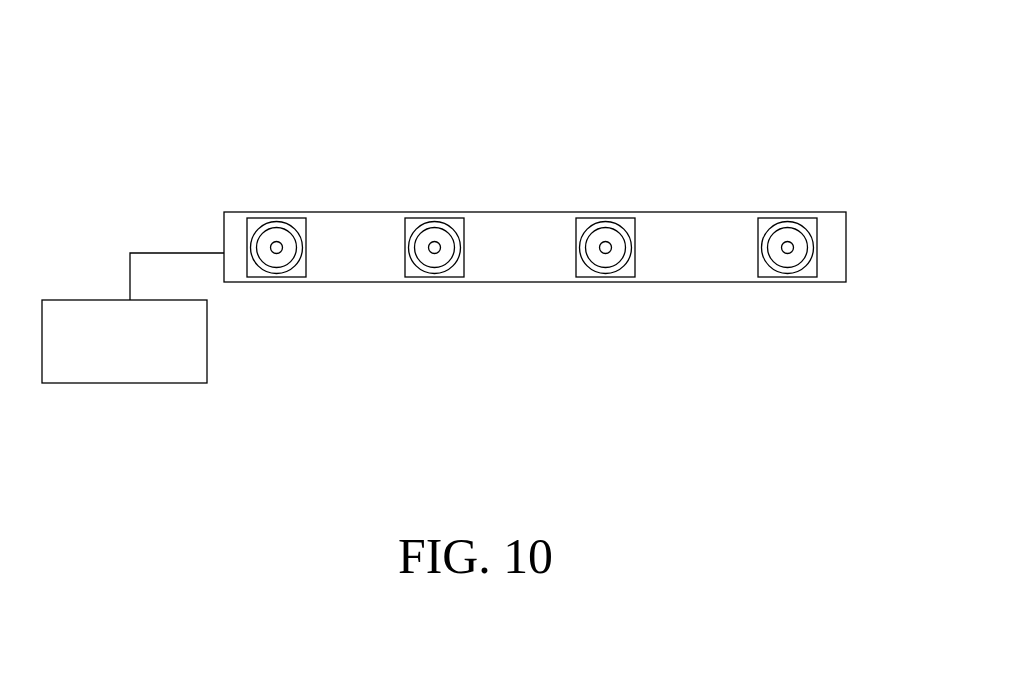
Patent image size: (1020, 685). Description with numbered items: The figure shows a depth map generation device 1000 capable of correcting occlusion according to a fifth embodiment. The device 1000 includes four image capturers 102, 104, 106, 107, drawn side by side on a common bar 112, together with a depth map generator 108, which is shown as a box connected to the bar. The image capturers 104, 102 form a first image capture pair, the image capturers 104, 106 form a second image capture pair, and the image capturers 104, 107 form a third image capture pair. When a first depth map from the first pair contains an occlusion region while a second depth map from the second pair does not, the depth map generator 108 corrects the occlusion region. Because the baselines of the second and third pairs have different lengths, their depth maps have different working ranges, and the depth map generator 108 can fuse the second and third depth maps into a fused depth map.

The depth map generation device 1000 is at (772, 74).
The mounting bar / housing 112 is at (846, 250).
The image capturer 102 is at (260, 277).
The image capturer 104 is at (453, 277).
The image capturer 106 is at (622, 277).
The image capturer 107 is at (810, 277).
The depth map generator 108 is at (130, 383).